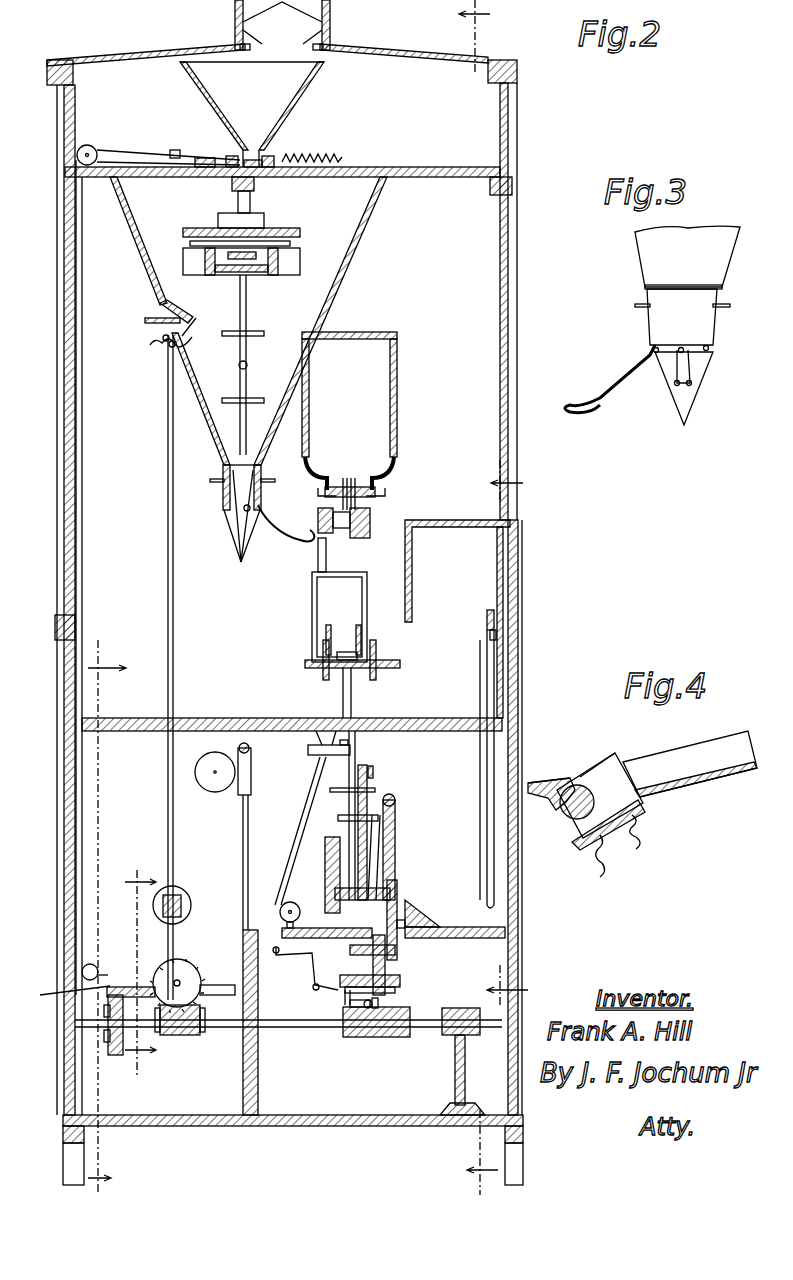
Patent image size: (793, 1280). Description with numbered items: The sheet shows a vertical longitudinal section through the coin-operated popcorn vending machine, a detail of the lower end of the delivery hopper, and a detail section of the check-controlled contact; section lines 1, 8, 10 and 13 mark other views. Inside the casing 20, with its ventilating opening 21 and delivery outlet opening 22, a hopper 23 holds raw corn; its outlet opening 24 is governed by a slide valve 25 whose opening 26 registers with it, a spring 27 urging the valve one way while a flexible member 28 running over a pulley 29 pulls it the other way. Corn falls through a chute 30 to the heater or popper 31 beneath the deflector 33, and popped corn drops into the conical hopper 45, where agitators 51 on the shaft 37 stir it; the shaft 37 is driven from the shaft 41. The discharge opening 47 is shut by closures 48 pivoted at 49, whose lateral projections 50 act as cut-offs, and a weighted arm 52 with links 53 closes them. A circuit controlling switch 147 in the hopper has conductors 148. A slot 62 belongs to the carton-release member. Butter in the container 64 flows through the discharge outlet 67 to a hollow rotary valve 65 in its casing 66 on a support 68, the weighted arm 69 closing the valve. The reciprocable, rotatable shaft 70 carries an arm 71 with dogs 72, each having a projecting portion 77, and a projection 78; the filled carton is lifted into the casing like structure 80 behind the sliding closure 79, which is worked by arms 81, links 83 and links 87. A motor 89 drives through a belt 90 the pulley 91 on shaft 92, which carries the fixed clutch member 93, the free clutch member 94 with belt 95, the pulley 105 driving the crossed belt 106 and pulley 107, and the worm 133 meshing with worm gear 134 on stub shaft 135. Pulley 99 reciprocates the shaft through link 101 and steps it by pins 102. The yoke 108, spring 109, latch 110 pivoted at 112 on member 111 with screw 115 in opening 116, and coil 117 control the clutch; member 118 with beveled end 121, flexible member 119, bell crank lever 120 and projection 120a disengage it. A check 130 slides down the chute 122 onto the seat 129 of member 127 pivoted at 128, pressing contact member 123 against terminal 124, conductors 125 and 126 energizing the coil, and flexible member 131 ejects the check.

In FIG. 2, the section line 1 is at (479, 597).
In FIG. 2, the section line 8 is at (108, 917).
In FIG. 2, the section line 10 is at (499, 732).
In FIG. 2, the section line 13 is at (137, 963).
In FIG. 2, the casing 20 is at (517, 312).
In FIG. 2, the ventilating opening 21 is at (300, 14).
In FIG. 2, the delivery outlet opening 22 is at (519, 566).
In FIG. 2, the hopper 23 is at (292, 80).
In FIG. 2, the outlet opening 24 is at (252, 150).
In FIG. 2, the slide valve 25 is at (282, 152).
In FIG. 2, the opening 26 is at (215, 152).
In FIG. 2, the spring 27 is at (336, 156).
In FIG. 2, the flexible member 28 is at (130, 150).
In FIG. 2, the pulley 29 is at (87, 144).
In FIG. 2, the chute 30 is at (255, 188).
In FIG. 2, the heater or popper 31 is at (285, 258).
In FIG. 2, the deflector 33 is at (290, 222).
In FIG. 2, the shaft 37 is at (247, 310).
In FIG. 2, the shaft 41 is at (167, 768).
In FIG. 2, the hopper 45 is at (336, 280).
In FIG. 3, the hopper 45 is at (710, 252).
In FIG. 2, the discharge opening 47 is at (246, 458).
In FIG. 2, the closures 48 is at (248, 548).
In FIG. 3, the closures 48 is at (690, 436).
In FIG. 2, the pivot 49 is at (262, 498).
In FIG. 3, the pivot 49 is at (712, 350).
In FIG. 2, the lateral projection 50 is at (214, 478).
In FIG. 3, the lateral projection 50 is at (636, 310).
In FIG. 2, the agitators 51 is at (258, 395).
In FIG. 3, the arm 52 is at (596, 414).
In FIG. 3, the links 53 is at (690, 370).
In FIG. 2, the elongated slot 62 is at (293, 530).
In FIG. 2, the container 64 is at (398, 382).
In FIG. 2, the hollow rotary valve 65 is at (352, 520).
In FIG. 2, the casing 66 is at (368, 538).
In FIG. 2, the discharge outlet 67 is at (350, 478).
In FIG. 2, the support 68 is at (378, 488).
In FIG. 2, the arm 69 is at (326, 562).
In FIG. 2, the shaft 70 is at (352, 706).
In FIG. 2, the arm or support 71 is at (382, 664).
In FIG. 2, the dogs 72 is at (352, 636).
In FIG. 2, the portion 77 is at (326, 678).
In FIG. 2, the projection 78 is at (324, 596).
In FIG. 2, the sliding closure 79 is at (504, 534).
In FIG. 2, the casing like structure 80 is at (412, 565).
In FIG. 2, the arms 81 is at (490, 893).
In FIG. 2, the links 83 is at (487, 752).
In FIG. 2, the links 87 is at (505, 725).
In FIG. 2, the motor 89 is at (208, 780).
In FIG. 2, the belt 90 is at (243, 852).
In FIG. 2, the pulley 91 is at (258, 1088).
In FIG. 2, the shaft 92 is at (288, 1030).
In FIG. 2, the clutch member 93 is at (412, 1038).
In FIG. 2, the clutch member 94 is at (376, 1040).
In FIG. 2, the belt 95 is at (364, 1040).
In FIG. 2, the pulley 99 is at (396, 856).
In FIG. 2, the link 101 is at (382, 836).
In FIG. 2, the pins or arms 102 is at (370, 792).
In FIG. 2, the pulley 105 is at (116, 1058).
In FIG. 2, the crossed belt 106 is at (121, 994).
In FIG. 2, the pulley 107 is at (125, 985).
In FIG. 2, the yoke 108 is at (348, 966).
In FIG. 2, the spring 109 is at (400, 963).
In FIG. 2, the latch device 110 is at (380, 1000).
In FIG. 2, the member 111 is at (343, 994).
In FIG. 2, the pivot 112 is at (396, 956).
In FIG. 2, the screw device 115 is at (395, 988).
In FIG. 2, the opening 116 is at (312, 988).
In FIG. 2, the magnetic coil 117 is at (410, 920).
In FIG. 2, the pivotally mounted member 118 is at (308, 752).
In FIG. 2, the flexible member 119 is at (306, 822).
In FIG. 2, the bell crank lever 120 is at (296, 952).
In FIG. 2, the projection 120a is at (376, 770).
In FIG. 2, the beveled extremity 121 is at (352, 758).
In FIG. 4, the chute or run way 122 is at (690, 780).
In FIG. 4, the resilient contact member 123 is at (696, 775).
In FIG. 4, the contact terminal 124 is at (580, 836).
In FIG. 4, the conductor 125 is at (642, 848).
In FIG. 4, the conductor 126 is at (600, 866).
In FIG. 4, the coin arresting and ejecting member 127 is at (552, 800).
In FIG. 4, the pivot 128 is at (568, 785).
In FIG. 4, the seat 129 is at (582, 775).
In FIG. 4, the check 130 is at (600, 795).
In FIG. 4, the flexible member 131 is at (538, 782).
In FIG. 2, the worm 133 is at (186, 1040).
In FIG. 2, the worm gear 134 is at (189, 916).
In FIG. 2, the stub shaft 135 is at (180, 982).
In FIG. 2, the circuit controlling switch 147 is at (205, 312).
In FIG. 2, the conductors 148 is at (150, 340).